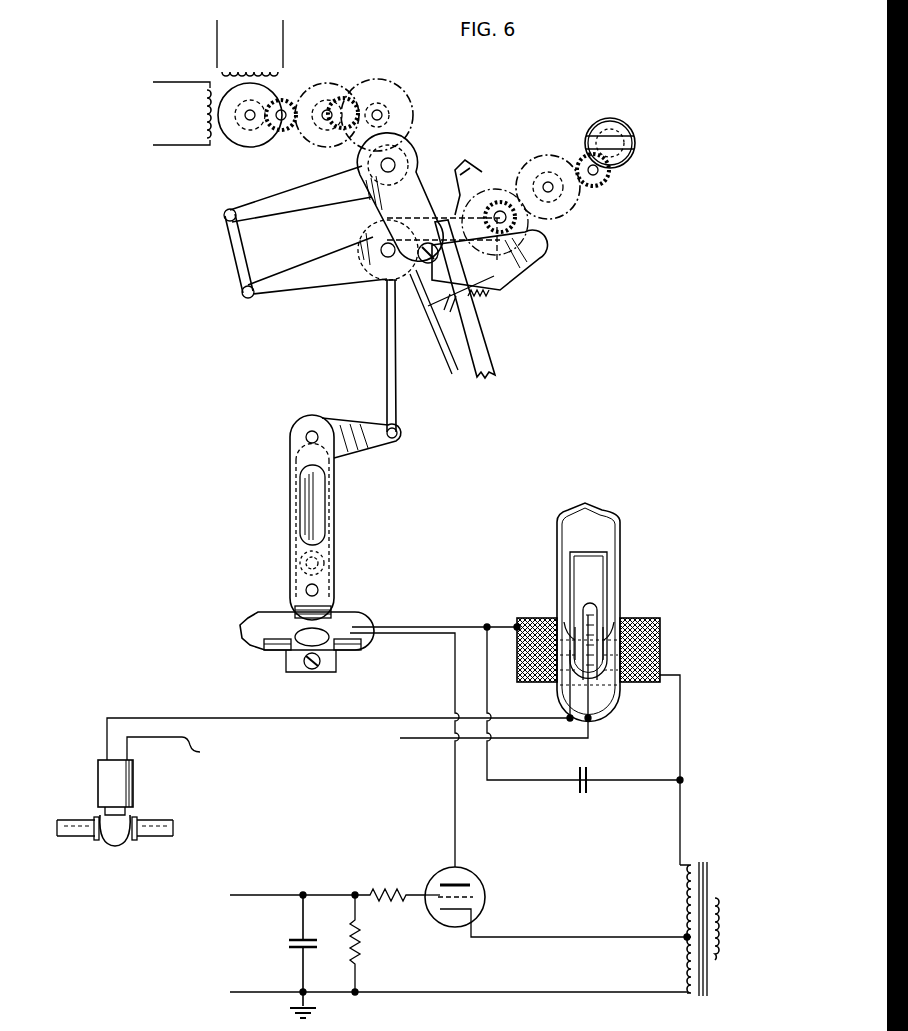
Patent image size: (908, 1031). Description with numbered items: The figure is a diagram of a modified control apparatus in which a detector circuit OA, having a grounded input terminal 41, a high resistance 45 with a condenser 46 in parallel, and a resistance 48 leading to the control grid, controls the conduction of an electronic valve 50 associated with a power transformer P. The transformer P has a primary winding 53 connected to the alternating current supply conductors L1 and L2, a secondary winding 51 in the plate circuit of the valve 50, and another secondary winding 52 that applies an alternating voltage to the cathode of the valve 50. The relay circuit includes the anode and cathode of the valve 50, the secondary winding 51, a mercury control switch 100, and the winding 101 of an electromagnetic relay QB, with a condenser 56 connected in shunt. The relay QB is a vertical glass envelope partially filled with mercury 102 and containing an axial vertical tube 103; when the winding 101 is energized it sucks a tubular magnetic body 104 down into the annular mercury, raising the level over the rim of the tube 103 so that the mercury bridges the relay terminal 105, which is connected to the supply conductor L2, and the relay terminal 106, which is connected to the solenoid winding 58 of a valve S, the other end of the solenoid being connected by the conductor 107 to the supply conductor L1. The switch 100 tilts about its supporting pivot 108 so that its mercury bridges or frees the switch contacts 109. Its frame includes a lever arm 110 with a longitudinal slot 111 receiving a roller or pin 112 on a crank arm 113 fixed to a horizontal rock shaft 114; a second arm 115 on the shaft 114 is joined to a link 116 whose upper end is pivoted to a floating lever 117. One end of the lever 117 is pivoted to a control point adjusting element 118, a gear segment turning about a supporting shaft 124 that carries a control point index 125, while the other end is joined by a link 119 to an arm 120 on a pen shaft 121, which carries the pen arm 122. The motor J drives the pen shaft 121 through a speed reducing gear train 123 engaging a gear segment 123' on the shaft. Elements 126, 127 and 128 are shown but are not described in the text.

The motor J is at (240, 135).
The speed reducing gear train 123 is at (344, 84).
The gear segment 123' is at (401, 115).
The pen shaft 121 is at (395, 164).
The arm 120 is at (249, 203).
The link 119 is at (240, 255).
The floating lever 117 is at (284, 296).
The supporting shaft 124 is at (381, 248).
The link 116 is at (396, 392).
The control point index 125 is at (442, 352).
The pen arm 122 is at (490, 360).
The slide member 126 is at (512, 236).
The control point adjusting element 118 is at (468, 182).
The gear wheel 128 is at (570, 133).
The disc 127 is at (628, 134).
The second arm 115 is at (346, 422).
The horizontal rock shaft 114 is at (312, 431).
The crank arm 113 is at (290, 452).
The lever arm 110 is at (330, 519).
The longitudinal slot 111 is at (316, 498).
The roller or pin 112 is at (325, 563).
The supporting pivot 108 is at (306, 591).
The mercury control switch 100 is at (342, 610).
The switch contacts 109 is at (398, 630).
The electromagnetic relay QB is at (619, 572).
The relay winding 101 is at (658, 652).
The tubular magnetic body 104 is at (570, 570).
The vertical tube 103 is at (582, 612).
The mercury 102 is at (608, 630).
The relay terminal 105 is at (590, 706).
The relay terminal 106 is at (566, 716).
The conductor 107 is at (128, 754).
The solenoid winding 58 is at (132, 790).
The valve S is at (116, 846).
The alternating current supply conductor L1 is at (775, 898).
The alternating current supply conductor L2 is at (775, 960).
The condenser 56 is at (585, 798).
The triode 50 is at (462, 870).
The resistance 48 is at (398, 890).
The high resistance 45 is at (364, 948).
The condenser 46 is at (290, 950).
The input terminal 41 is at (441, 995).
The detector circuit OA is at (252, 932).
The power transformer P is at (716, 852).
The secondary winding 51 is at (686, 908).
The secondary winding 52 is at (686, 965).
The primary winding 53 is at (720, 938).